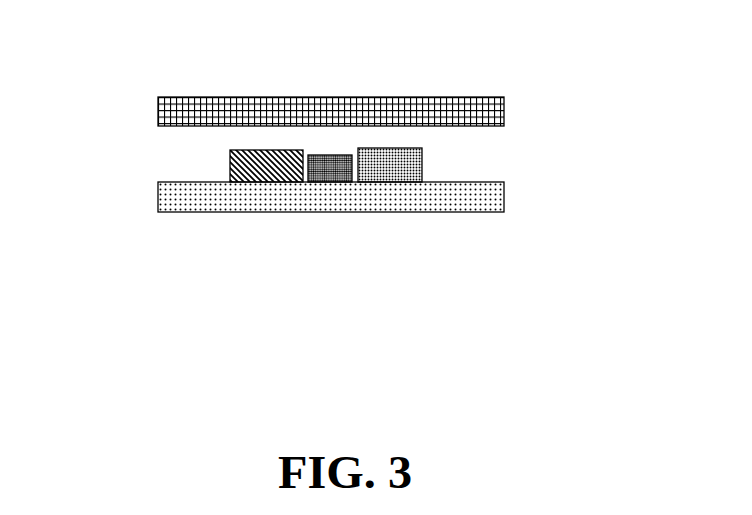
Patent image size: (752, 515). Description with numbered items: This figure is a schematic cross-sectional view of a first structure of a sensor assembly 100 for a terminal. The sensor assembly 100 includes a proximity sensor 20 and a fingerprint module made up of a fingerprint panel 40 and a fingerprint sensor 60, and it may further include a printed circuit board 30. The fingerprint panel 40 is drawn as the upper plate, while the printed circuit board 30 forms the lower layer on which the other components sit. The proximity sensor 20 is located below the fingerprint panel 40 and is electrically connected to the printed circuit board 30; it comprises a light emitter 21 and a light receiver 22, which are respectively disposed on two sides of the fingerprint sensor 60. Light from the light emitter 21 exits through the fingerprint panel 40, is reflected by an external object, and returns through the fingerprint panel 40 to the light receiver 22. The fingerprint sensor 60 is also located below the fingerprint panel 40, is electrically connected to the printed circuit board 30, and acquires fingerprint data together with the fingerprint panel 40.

The sensor assembly 100 is at (141, 80).
The proximity sensor 20 is at (447, 308).
The light emitter 21 is at (263, 168).
The light receiver 22 is at (403, 180).
The printed circuit board 30 is at (232, 197).
The fingerprint panel 40 is at (462, 108).
The fingerprint sensor 60 is at (338, 155).